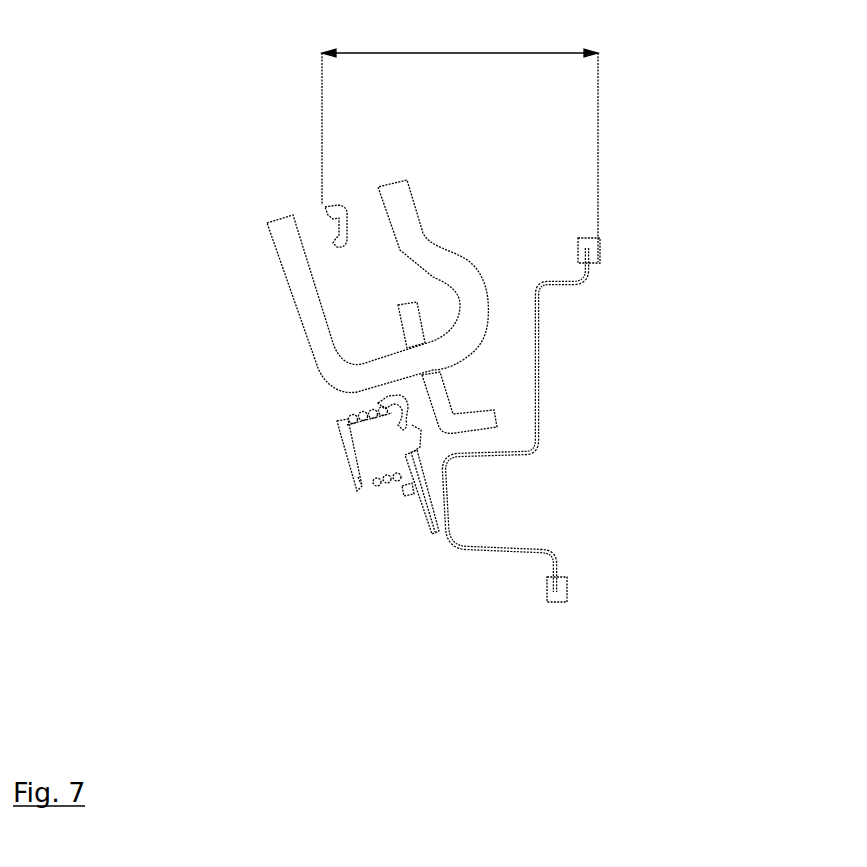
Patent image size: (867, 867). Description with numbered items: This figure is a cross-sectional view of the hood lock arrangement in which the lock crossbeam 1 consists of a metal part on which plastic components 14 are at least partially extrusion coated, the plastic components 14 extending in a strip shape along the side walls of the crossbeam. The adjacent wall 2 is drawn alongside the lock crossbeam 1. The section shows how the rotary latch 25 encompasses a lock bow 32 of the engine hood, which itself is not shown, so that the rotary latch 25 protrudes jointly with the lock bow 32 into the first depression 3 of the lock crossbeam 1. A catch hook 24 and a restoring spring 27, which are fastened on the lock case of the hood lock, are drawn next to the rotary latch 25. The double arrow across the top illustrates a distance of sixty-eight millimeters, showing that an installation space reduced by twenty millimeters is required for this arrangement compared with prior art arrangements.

The lock crossbeam 1 is at (450, 510).
The wall 2 is at (550, 400).
The first depression 3 is at (508, 300).
The plastic components 14 is at (600, 252).
The catch hook 24 is at (328, 210).
The rotary latch 25 is at (413, 322).
The restoring spring 27 is at (353, 422).
The lock bow 32 is at (292, 272).